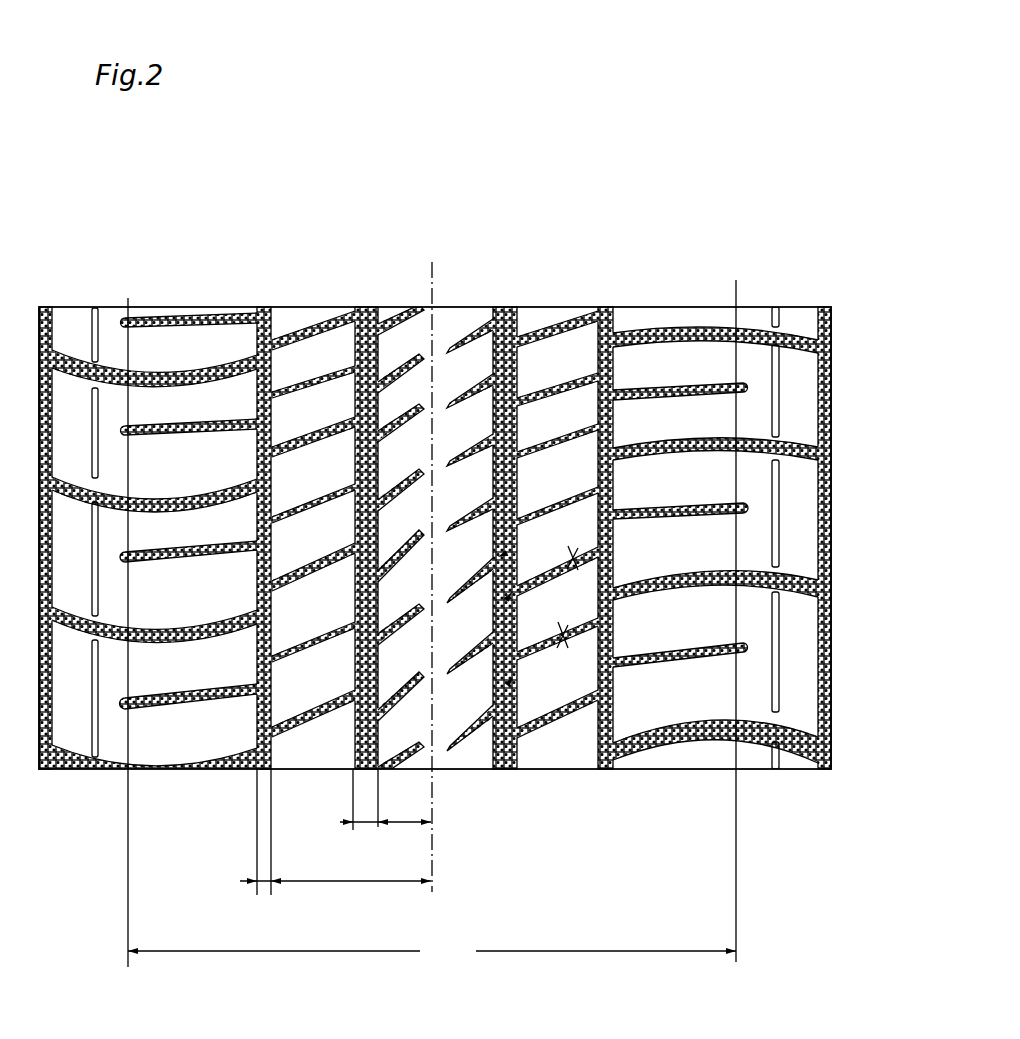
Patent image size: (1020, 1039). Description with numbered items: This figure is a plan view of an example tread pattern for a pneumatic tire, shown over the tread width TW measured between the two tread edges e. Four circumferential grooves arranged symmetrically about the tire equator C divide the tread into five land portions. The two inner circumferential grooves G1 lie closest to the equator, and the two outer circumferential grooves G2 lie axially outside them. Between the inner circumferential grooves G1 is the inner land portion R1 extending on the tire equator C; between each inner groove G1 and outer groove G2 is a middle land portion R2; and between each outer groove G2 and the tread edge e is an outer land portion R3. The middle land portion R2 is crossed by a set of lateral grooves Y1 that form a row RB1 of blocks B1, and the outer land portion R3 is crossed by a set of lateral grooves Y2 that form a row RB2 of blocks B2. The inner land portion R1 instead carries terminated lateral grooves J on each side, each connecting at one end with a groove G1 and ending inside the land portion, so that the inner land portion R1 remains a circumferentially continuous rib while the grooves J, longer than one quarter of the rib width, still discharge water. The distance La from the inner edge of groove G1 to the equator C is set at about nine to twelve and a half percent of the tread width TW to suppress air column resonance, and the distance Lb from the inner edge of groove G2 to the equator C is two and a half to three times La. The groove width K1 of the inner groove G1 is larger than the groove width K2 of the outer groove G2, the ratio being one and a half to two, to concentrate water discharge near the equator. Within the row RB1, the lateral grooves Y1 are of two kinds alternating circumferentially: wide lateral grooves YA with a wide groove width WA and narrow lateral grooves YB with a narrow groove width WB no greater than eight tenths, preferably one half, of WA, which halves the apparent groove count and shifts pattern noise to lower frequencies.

The inner land portion R1 is at (413, 307).
The middle land portion R2 is at (292, 307).
The outer land portion R3 is at (157, 307).
The row of blocks RB1 is at (547, 307).
The row of blocks RB2 is at (688, 307).
The inner circumferential groove G1 is at (365, 307).
The outer circumferential groove G2 is at (262, 307).
The tire equator C is at (433, 292).
The block B1 is at (312, 428).
The block B2 is at (200, 419).
The lateral groove Y1 is at (572, 857).
The lateral groove Y2 is at (662, 388).
The wide lateral groove YA is at (512, 679).
The narrow lateral groove YB is at (511, 593).
The terminated lateral groove J is at (499, 557).
The groove width WA is at (517, 660).
The groove width WB is at (517, 587).
The tread edge e is at (128, 828).
The groove width K1 is at (362, 826).
The groove width K2 is at (259, 887).
The distance La is at (397, 823).
The distance Lb is at (354, 883).
The tread width TW is at (432, 952).